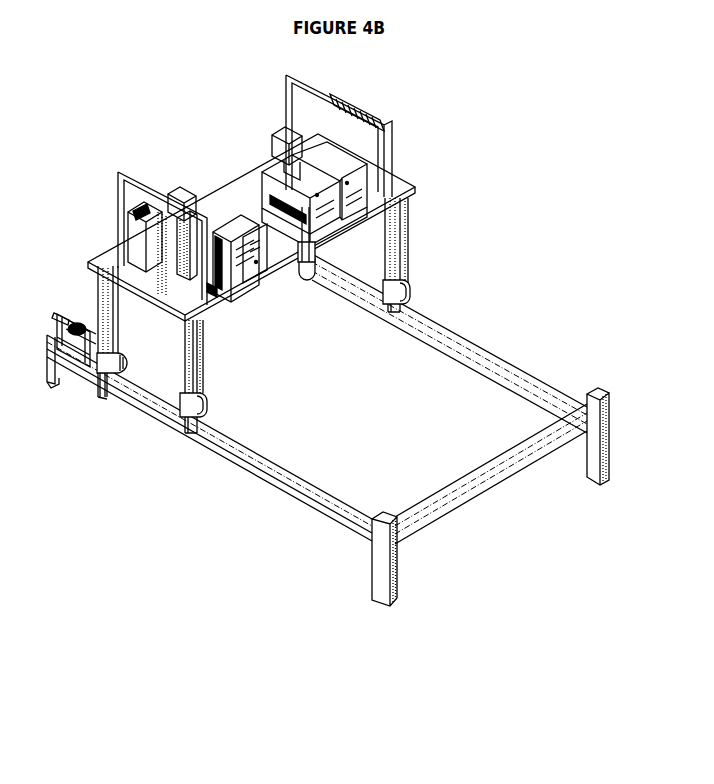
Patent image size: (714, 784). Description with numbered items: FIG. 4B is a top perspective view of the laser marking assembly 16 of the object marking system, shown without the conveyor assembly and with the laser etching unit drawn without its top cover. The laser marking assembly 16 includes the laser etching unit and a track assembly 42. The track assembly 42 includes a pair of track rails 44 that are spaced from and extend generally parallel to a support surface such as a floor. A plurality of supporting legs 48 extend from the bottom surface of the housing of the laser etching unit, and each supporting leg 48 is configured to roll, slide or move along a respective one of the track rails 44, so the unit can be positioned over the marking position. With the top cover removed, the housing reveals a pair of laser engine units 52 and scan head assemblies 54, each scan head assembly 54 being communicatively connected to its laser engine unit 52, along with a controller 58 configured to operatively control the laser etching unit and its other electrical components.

The laser marking assembly 16 is at (92, 132).
The track assembly 42 is at (345, 536).
The track rails 44 is at (548, 392).
The supporting legs 48 is at (205, 394).
The laser engine unit 52 is at (400, 242).
The scan head assembly 54 is at (180, 190).
The controller 58 is at (119, 220).